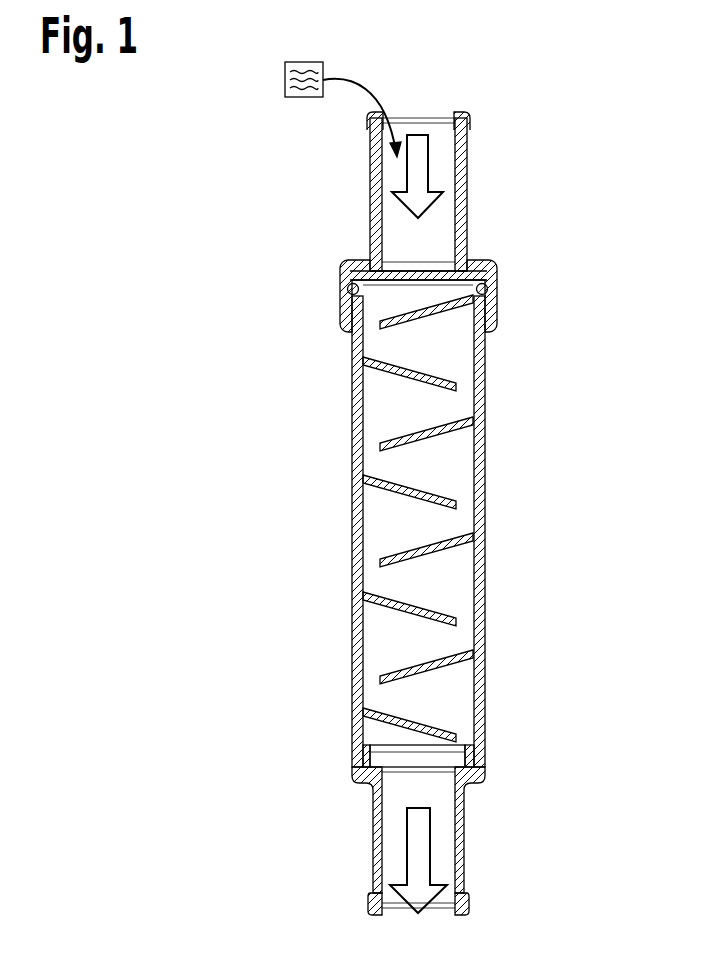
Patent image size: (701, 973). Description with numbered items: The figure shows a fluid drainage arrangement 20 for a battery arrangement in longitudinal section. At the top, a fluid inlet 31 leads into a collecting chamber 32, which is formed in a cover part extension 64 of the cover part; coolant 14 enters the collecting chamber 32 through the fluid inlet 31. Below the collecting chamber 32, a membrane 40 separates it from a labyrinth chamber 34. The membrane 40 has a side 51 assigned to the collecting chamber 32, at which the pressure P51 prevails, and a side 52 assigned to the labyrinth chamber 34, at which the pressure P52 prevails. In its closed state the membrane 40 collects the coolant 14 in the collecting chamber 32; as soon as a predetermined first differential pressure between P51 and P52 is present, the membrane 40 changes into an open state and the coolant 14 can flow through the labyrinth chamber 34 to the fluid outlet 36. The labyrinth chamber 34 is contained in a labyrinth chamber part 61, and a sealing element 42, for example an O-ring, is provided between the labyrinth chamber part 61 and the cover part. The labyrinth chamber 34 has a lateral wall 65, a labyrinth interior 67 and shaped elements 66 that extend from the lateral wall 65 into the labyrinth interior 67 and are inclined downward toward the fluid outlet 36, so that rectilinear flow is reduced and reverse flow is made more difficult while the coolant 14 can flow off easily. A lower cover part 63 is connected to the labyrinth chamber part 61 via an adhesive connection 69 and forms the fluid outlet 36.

The coolant 14 is at (285, 80).
The fluid drainage arrangement 20 is at (195, 205).
The fluid inlet 31 is at (447, 110).
The collecting chamber 32 is at (438, 175).
The labyrinth chamber 34 is at (405, 531).
The fluid outlet 36 is at (443, 909).
The membrane 40 is at (478, 256).
The sealing element 42 is at (488, 291).
The side of the membrane 51 is at (418, 237).
The side of the membrane 52 is at (405, 302).
The labyrinth chamber part 61 is at (350, 413).
The lower cover part 63 is at (378, 845).
The cover part extension 64 is at (467, 148).
The lateral wall 65 is at (385, 474).
The shaped elements 66 is at (430, 556).
The labyrinth interior 67 is at (418, 585).
The adhesive connection 69 is at (485, 752).
The pressure P51 is at (405, 237).
The pressure P52 is at (383, 313).